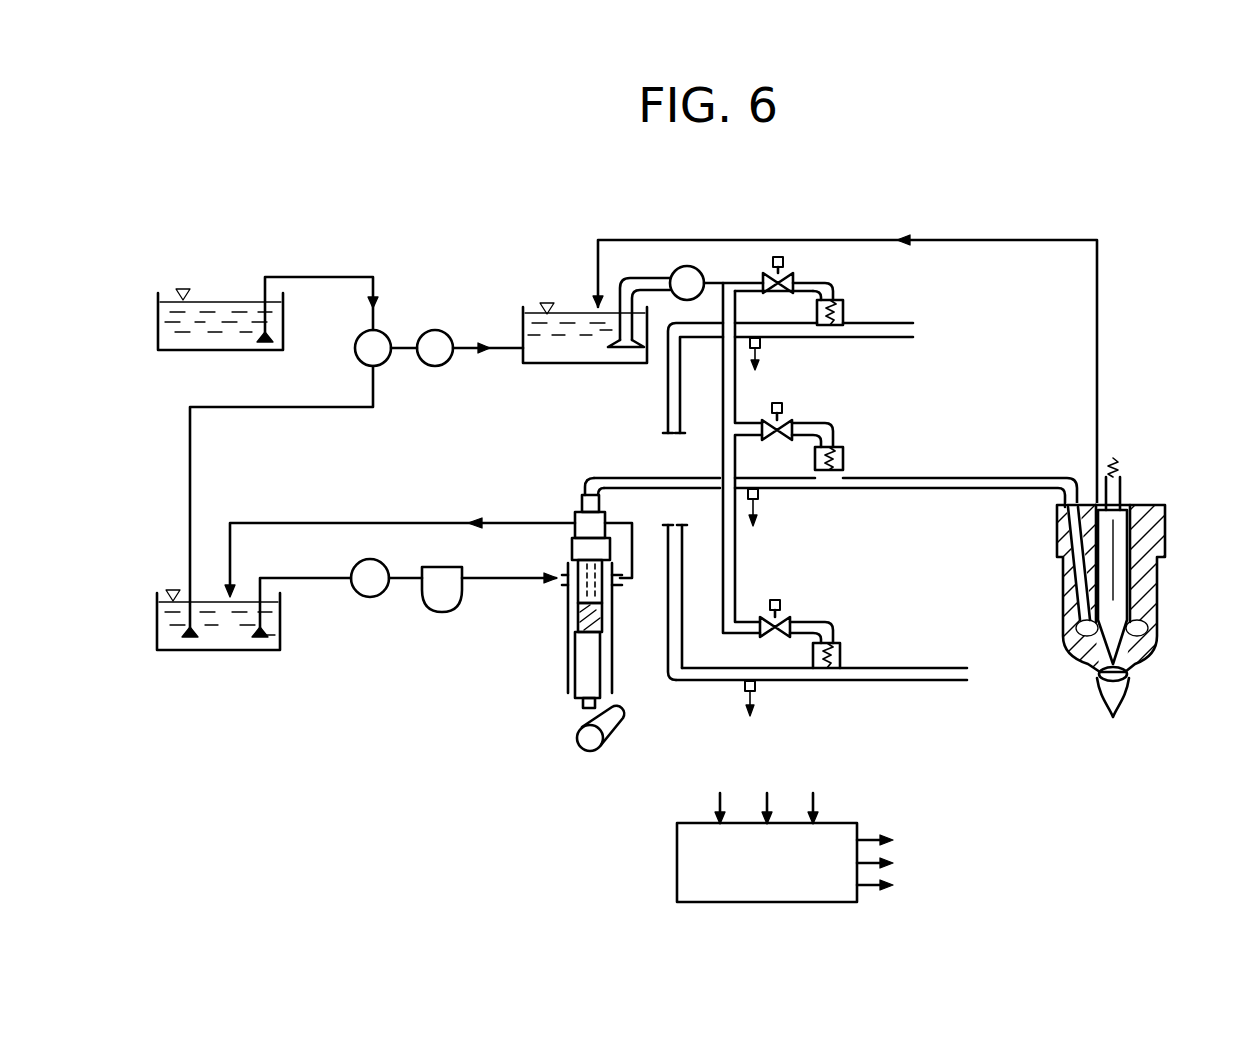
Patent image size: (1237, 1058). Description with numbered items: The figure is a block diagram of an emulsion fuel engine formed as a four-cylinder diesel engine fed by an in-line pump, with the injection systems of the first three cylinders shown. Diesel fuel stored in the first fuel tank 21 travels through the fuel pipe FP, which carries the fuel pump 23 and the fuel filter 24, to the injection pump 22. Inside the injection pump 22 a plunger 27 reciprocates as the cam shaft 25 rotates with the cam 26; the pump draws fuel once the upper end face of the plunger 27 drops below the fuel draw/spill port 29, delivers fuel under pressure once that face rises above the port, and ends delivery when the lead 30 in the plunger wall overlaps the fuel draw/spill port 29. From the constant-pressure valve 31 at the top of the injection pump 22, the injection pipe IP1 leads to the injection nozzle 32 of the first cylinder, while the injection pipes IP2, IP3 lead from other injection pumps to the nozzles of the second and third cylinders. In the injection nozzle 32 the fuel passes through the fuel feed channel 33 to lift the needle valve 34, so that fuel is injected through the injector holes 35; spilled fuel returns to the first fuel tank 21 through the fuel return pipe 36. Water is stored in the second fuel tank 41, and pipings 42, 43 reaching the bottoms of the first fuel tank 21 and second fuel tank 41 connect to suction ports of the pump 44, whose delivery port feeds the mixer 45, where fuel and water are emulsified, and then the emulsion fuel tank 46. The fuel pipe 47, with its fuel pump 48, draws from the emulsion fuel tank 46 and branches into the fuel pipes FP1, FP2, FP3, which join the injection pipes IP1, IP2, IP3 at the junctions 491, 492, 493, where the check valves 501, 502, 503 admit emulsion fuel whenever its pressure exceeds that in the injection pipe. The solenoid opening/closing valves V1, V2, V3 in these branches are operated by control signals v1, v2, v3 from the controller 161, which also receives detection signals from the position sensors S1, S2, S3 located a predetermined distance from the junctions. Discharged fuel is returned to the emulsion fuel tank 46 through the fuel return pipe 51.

The first fuel tank 21 is at (216, 652).
The injection pump 22 is at (566, 673).
The fuel pump 23 is at (367, 598).
The fuel filter 24 is at (440, 613).
The cam shaft 25 is at (583, 753).
The cam 26 is at (616, 733).
The plunger 27 is at (598, 677).
The fuel draw/spill port 29 is at (616, 587).
The lead 30 is at (585, 608).
The constant-pressure valve 31 is at (582, 503).
The injection nozzle 32 is at (1158, 580).
The fuel feed channel 33 is at (1072, 605).
The needle valve 34 is at (1113, 550).
The injector holes 35 is at (1116, 709).
The fuel return pipe 36 is at (388, 522).
The second fuel tank 41 is at (178, 352).
The piping 42 is at (290, 409).
The piping 43 is at (318, 277).
The pump 44 is at (383, 331).
The mixer 45 is at (440, 331).
The emulsion fuel tank 46 is at (527, 363).
The fuel pipe 47 is at (712, 282).
The fuel pump 48 is at (687, 265).
The fuel return pipe 51 is at (984, 239).
The controller 161 is at (677, 890).
The junction 491 is at (845, 455).
The junction 492 is at (842, 655).
The junction 493 is at (845, 310).
The check valve 501 is at (822, 471).
The check valve 502 is at (822, 669).
The check valve 503 is at (833, 326).
The fuel pipe FP is at (508, 580).
The fuel pipe FP1 is at (833, 430).
The fuel pipe FP2 is at (833, 625).
The fuel pipe FP3 is at (835, 283).
The injection pipe IP1 is at (905, 490).
The injection pipe IP2 is at (925, 682).
The injection pipe IP3 is at (908, 324).
The position sensor S1 is at (758, 500).
The position sensor S2 is at (755, 692).
The position sensor S3 is at (760, 347).
The solenoid opening/closing valve V1 is at (782, 438).
The solenoid opening/closing valve V2 is at (772, 636).
The solenoid opening/closing valve V3 is at (785, 296).
The control signal v1 is at (790, 408).
The control signal v2 is at (790, 605).
The control signal v3 is at (790, 262).